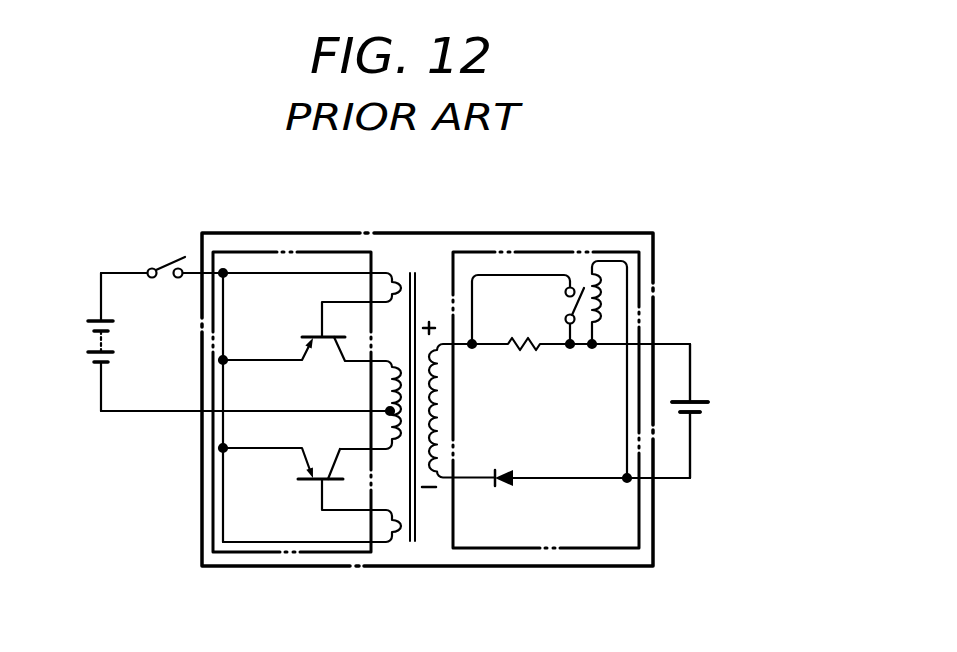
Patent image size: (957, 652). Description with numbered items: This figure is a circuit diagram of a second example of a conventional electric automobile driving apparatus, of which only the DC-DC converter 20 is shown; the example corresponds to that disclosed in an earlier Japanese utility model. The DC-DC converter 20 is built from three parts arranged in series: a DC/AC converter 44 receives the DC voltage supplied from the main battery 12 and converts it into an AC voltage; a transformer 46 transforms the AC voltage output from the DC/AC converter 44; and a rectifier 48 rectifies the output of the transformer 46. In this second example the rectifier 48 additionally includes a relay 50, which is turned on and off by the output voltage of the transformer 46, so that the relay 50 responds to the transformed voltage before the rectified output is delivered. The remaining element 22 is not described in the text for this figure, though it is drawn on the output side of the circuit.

The main battery 12 is at (117, 347).
The DC-DC converter 20 is at (422, 233).
The rechargeable battery 22 is at (695, 398).
The DC/AC converter 44 is at (250, 553).
The transformer 46 is at (425, 494).
The rectifier 48 is at (517, 549).
The relay 50 is at (563, 310).